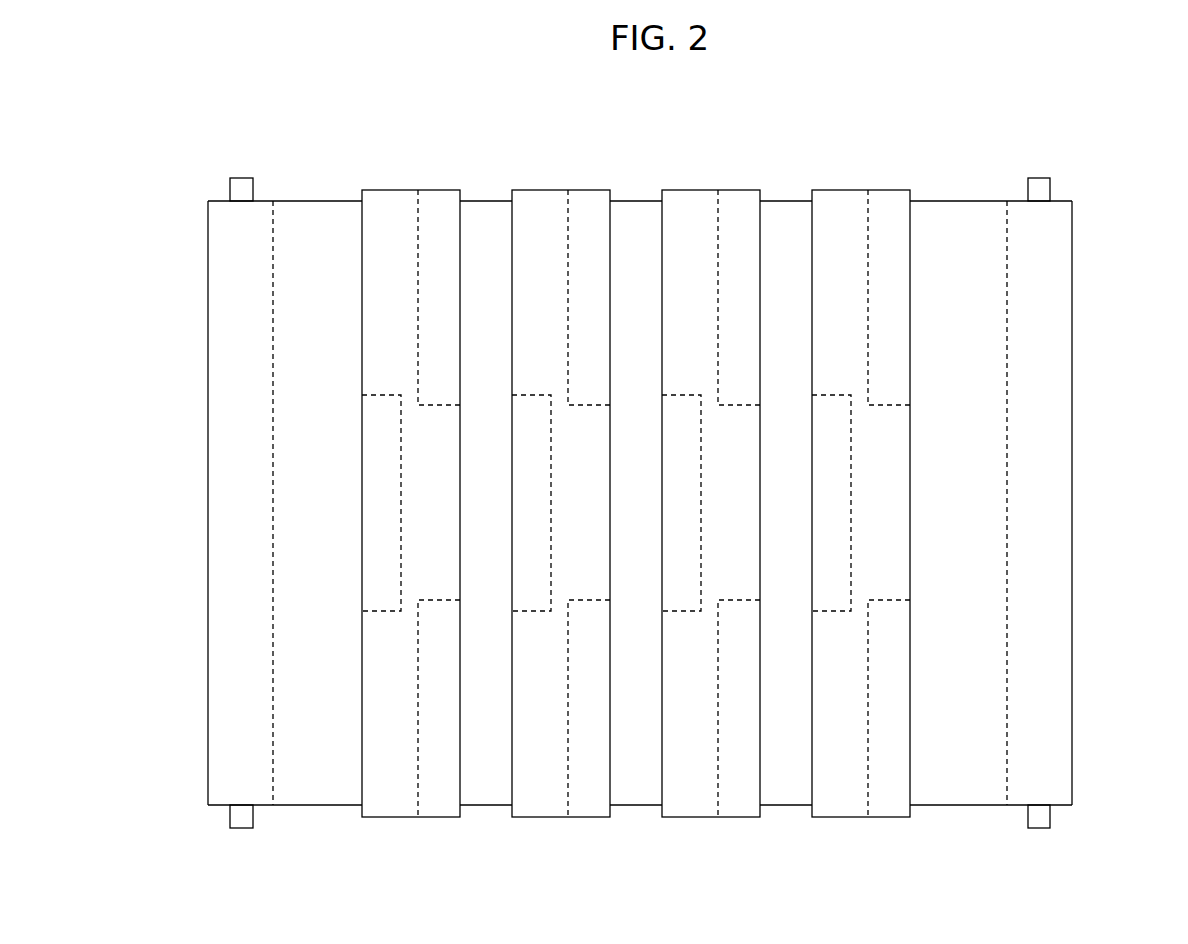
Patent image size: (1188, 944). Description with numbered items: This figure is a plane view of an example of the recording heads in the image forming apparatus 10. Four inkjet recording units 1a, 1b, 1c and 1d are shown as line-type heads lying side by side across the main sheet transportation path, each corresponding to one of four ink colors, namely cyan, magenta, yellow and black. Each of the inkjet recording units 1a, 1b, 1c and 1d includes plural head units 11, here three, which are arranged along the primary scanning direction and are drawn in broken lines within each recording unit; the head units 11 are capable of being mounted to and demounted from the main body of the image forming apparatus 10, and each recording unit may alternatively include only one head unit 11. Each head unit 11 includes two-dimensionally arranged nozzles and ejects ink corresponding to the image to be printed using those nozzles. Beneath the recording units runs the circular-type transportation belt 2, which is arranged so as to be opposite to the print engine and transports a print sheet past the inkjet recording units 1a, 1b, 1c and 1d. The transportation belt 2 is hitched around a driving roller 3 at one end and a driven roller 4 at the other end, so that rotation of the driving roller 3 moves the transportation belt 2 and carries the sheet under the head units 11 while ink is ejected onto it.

The image forming apparatus 10 is at (1154, 130).
The transportation belt 2 is at (965, 212).
The driving roller 3 is at (231, 190).
The driven roller 4 is at (1052, 190).
The inkjet recording unit 1a is at (825, 190).
The inkjet recording unit 1b is at (675, 190).
The inkjet recording unit 1c is at (525, 190).
The inkjet recording unit 1d is at (375, 190).
The head unit 11 is at (447, 222).